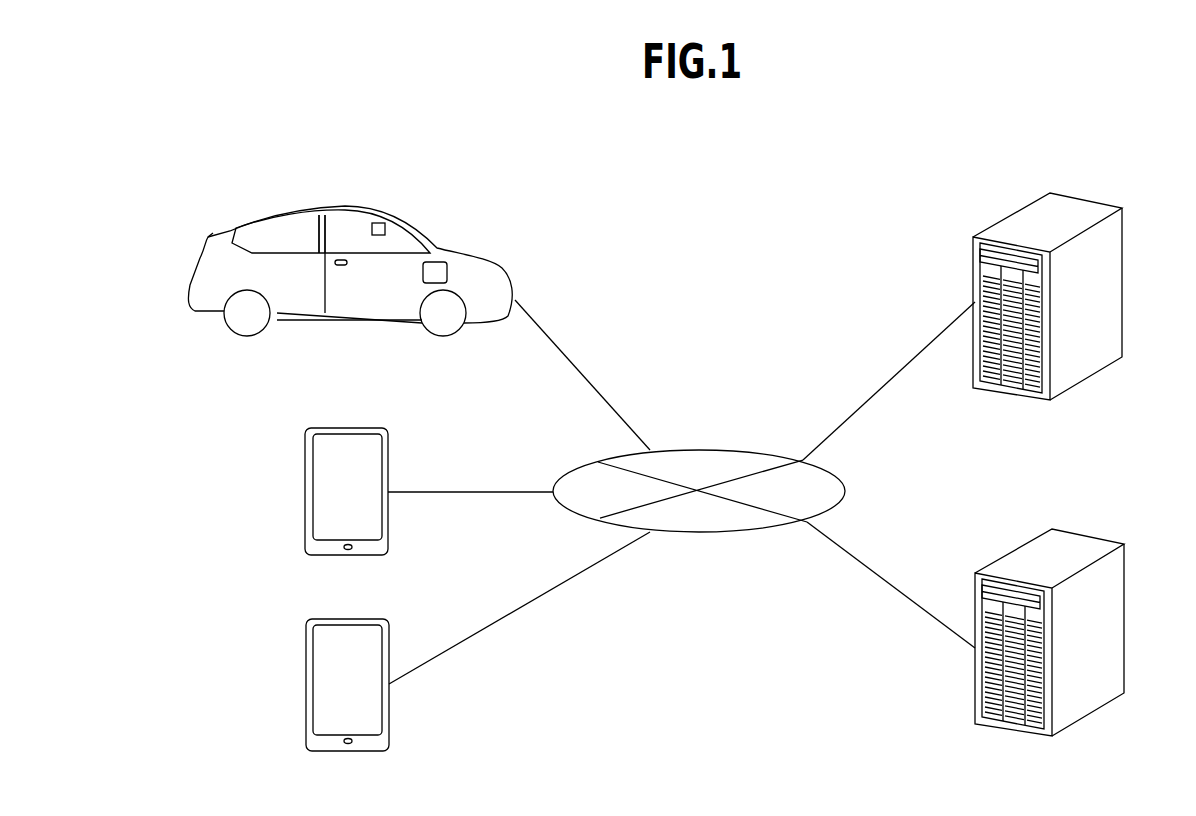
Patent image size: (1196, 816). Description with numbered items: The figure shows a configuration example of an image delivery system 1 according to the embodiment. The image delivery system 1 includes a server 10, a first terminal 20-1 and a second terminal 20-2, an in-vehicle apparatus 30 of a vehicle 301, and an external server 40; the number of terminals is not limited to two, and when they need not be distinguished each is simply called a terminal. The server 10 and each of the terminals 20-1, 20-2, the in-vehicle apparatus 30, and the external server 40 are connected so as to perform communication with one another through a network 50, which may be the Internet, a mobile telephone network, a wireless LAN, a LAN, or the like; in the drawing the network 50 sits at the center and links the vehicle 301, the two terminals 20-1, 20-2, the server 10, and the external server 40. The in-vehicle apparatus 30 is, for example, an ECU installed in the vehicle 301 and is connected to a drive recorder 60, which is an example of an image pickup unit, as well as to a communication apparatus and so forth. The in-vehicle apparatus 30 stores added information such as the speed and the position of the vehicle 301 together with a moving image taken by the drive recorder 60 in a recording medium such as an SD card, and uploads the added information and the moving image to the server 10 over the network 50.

The image delivery system 1 is at (163, 210).
The server 10 is at (1122, 240).
The terminal 20-1 is at (374, 425).
The terminal 20-2 is at (375, 616).
The in-vehicle apparatus 30 is at (438, 263).
The vehicle 301 is at (322, 213).
The external server 40 is at (1123, 582).
The network 50 is at (703, 450).
The drive recorder 60 is at (385, 223).